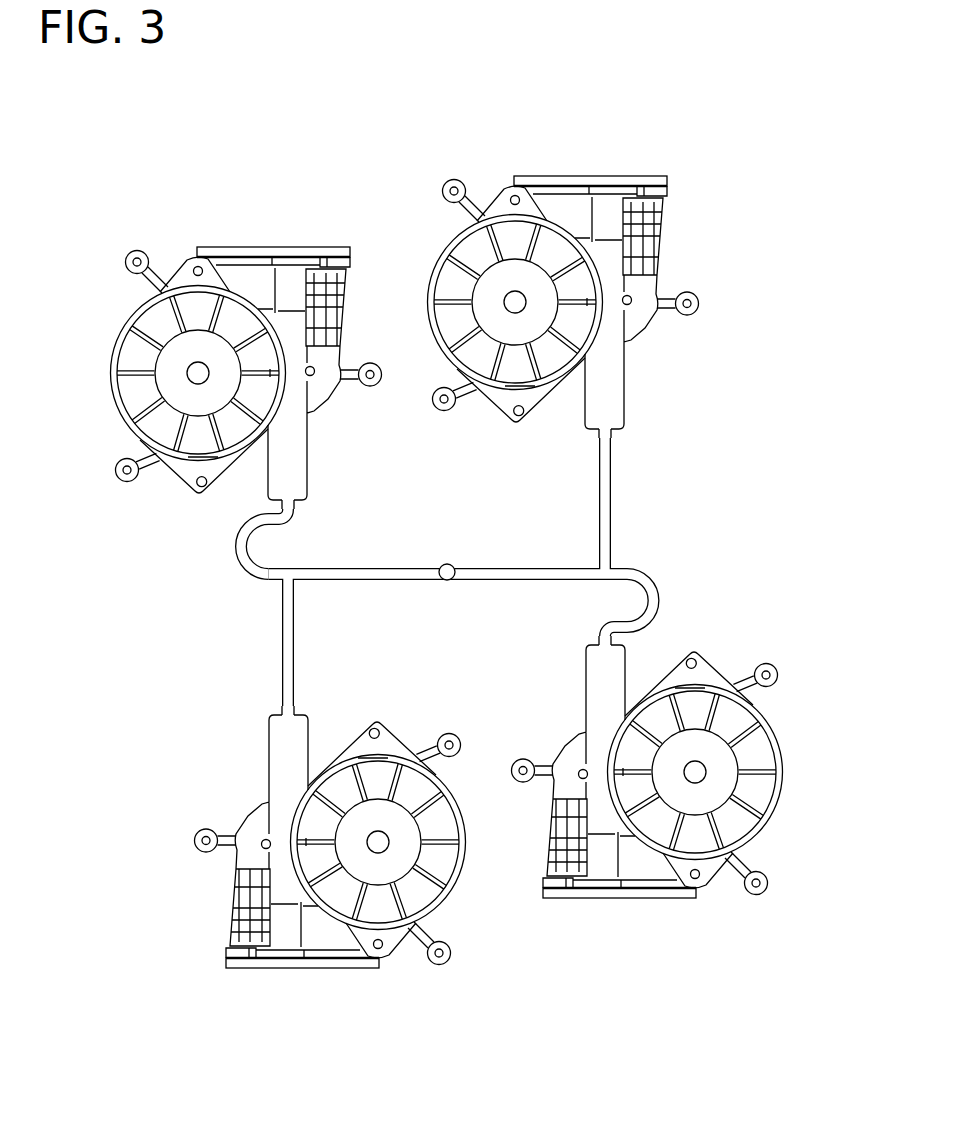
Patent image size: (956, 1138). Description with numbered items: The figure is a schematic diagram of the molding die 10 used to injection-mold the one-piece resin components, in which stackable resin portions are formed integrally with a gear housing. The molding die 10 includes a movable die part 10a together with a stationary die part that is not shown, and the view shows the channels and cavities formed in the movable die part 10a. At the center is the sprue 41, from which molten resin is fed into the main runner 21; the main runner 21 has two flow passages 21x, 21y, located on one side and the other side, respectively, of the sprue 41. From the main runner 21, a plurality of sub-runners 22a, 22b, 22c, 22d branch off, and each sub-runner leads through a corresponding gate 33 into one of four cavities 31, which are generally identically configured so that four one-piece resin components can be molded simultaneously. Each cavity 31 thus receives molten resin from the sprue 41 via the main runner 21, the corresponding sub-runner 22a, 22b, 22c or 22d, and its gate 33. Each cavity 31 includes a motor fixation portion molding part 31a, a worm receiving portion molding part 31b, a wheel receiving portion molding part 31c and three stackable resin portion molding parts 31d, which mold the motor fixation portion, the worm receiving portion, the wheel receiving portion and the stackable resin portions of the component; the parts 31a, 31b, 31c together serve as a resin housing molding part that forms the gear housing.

The molding die 10 is at (461, 564).
The movable die part 10a is at (344, 152).
The main runner 21 is at (388, 642).
The flow passage 21x is at (510, 581).
The flow passage 21y is at (408, 581).
The sub-runner 22a is at (612, 492).
The sub-runner 22b is at (661, 604).
The sub-runner 22c is at (282, 668).
The sub-runner 22d is at (236, 548).
The cavity 31 is at (135, 318).
The motor fixation portion molding part 31a is at (250, 247).
The worm receiving portion molding part 31b is at (310, 467).
The wheel receiving portion molding part 31c is at (176, 477).
The stackable resin portion molding part 31d is at (137, 250).
The gate 33 is at (296, 504).
The sprue 41 is at (447, 564).